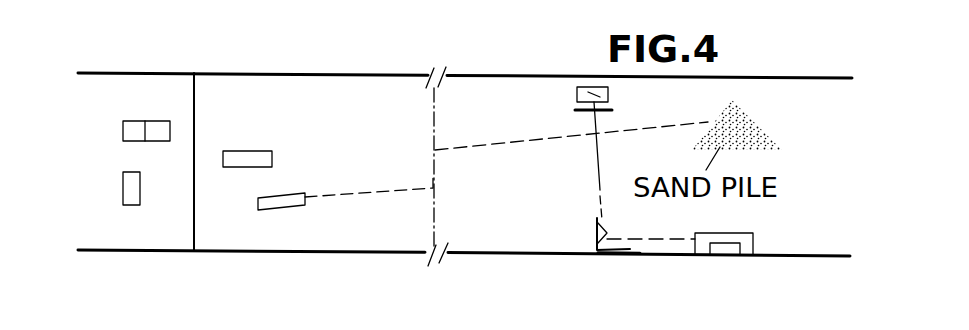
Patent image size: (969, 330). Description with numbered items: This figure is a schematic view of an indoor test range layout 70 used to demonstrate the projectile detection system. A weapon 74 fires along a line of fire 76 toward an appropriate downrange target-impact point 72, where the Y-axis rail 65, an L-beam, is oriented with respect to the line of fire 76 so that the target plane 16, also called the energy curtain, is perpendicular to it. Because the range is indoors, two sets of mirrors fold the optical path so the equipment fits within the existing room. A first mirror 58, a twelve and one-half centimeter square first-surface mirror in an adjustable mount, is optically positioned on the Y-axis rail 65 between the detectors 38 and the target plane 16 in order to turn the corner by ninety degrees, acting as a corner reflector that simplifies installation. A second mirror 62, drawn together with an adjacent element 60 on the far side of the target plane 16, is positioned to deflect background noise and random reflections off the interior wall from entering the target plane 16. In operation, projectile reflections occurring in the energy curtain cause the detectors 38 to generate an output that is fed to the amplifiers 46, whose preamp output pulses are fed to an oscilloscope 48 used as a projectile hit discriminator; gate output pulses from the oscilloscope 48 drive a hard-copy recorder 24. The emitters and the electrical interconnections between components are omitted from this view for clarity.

The indoor test range layout 70 is at (405, 253).
The amplifier 46 is at (143, 121).
The hard-copy recorder 24 is at (245, 150).
The oscilloscope 48 is at (122, 192).
The weapon 74 is at (285, 208).
The line of fire 76 is at (503, 148).
The downrange target-impact point 72 is at (592, 135).
The detector 60 is at (576, 103).
The second mirror 62 is at (600, 95).
The target plane 16 is at (597, 193).
The first mirror 58 is at (605, 231).
The Y-axis rail 65 is at (612, 256).
The detector 38 is at (717, 257).